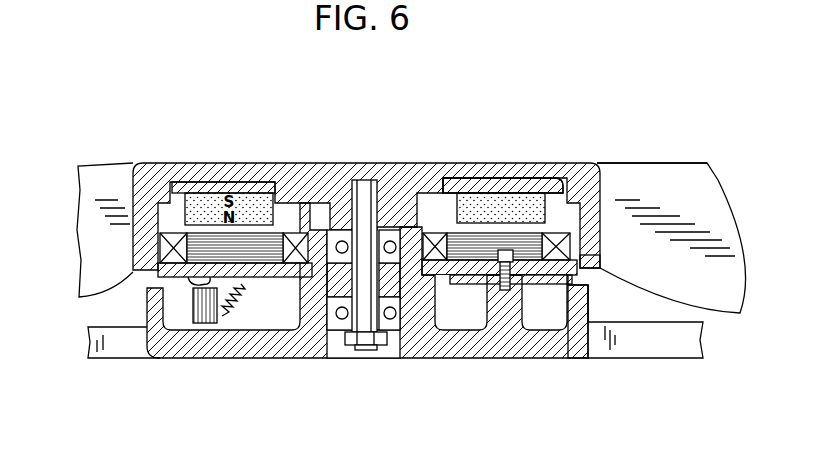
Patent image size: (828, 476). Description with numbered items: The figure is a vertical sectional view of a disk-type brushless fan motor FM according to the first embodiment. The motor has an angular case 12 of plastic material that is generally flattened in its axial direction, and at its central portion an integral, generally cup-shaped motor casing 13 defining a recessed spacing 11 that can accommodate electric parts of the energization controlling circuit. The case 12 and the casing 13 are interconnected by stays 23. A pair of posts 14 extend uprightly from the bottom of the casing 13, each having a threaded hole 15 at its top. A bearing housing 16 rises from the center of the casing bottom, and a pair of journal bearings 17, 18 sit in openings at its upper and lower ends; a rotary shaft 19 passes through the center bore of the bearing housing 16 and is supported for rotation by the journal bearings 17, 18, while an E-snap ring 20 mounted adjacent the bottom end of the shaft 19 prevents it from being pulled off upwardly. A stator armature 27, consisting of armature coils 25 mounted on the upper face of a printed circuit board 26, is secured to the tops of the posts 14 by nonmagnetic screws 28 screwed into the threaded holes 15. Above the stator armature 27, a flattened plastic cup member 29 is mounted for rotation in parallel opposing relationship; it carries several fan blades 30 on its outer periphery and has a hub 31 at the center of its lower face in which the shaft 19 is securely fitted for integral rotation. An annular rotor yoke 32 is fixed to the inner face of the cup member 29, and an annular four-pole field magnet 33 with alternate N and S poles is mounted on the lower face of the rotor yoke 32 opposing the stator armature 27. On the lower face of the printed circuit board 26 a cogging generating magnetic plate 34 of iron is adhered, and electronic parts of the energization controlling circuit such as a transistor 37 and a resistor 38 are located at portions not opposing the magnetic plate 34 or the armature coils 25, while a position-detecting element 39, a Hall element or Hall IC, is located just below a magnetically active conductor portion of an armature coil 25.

The recessed spacing 11 is at (460, 330).
The angular case 12 is at (655, 316).
The motor casing 13 is at (578, 276).
The posts 14 is at (500, 292).
The threaded hole 15 is at (461, 302).
The bearing housing 16 is at (302, 295).
The journal bearing 17 is at (338, 232).
The journal bearing 18 is at (338, 330).
The rotary shaft 19 is at (360, 180).
The E-snap ring 20 is at (348, 350).
The stays 23 is at (105, 358).
The armature coils 25 is at (622, 180).
The printed circuit board 26 is at (590, 272).
The stator armature 27 is at (557, 220).
The screws 28 is at (544, 302).
The cup member 29 is at (489, 160).
The fan blades 30 is at (690, 180).
The hub 31 is at (398, 215).
The rotor yoke 32 is at (463, 180).
The field magnet 33 is at (529, 193).
The cogging generating magnetic plate 34 is at (583, 305).
The transistor 37 is at (202, 323).
The resistor 38 is at (235, 316).
The position-detecting element 39 is at (190, 284).
The disk-type brushless fan motor FM is at (521, 94).